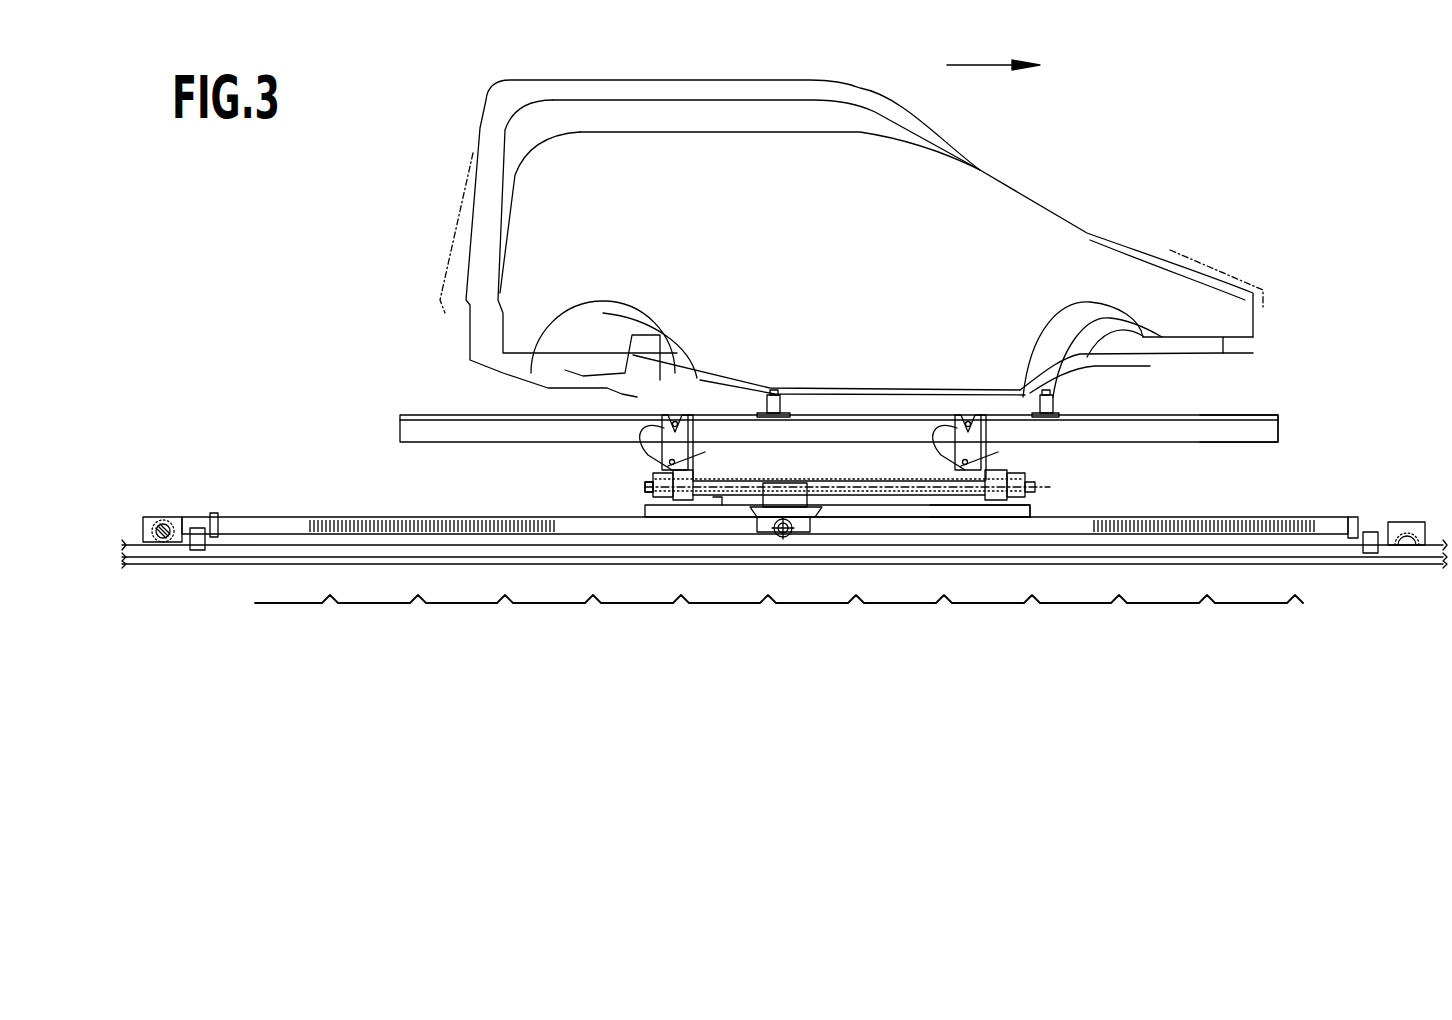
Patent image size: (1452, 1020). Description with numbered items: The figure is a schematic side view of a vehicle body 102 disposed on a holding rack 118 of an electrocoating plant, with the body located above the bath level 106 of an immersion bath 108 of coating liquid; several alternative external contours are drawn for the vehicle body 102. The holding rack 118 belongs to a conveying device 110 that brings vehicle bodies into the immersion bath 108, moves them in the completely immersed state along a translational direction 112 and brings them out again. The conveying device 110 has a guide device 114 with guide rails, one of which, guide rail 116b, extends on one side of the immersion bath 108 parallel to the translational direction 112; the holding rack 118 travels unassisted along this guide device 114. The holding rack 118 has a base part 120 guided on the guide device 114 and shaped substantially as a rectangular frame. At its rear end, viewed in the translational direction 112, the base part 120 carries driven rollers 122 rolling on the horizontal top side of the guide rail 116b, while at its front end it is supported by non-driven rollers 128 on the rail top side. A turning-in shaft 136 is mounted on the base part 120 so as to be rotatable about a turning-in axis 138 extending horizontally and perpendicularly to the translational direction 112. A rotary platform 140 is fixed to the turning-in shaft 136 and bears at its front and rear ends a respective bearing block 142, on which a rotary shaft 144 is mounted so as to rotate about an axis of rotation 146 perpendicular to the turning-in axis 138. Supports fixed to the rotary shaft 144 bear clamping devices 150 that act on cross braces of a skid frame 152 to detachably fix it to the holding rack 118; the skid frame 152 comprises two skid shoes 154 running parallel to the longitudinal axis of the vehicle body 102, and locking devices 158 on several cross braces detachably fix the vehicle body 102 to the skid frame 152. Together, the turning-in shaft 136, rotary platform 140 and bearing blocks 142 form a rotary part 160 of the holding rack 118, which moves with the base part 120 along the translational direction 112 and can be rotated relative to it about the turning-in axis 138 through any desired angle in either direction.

The vehicle body 102 is at (980, 177).
The bath level 106 is at (1163, 582).
The immersion bath 108 is at (889, 688).
The conveying device 110 is at (132, 512).
The translational direction 112 is at (980, 64).
The guide device 114 is at (290, 575).
The guide rail 116b is at (228, 547).
The holding rack 118 is at (318, 510).
The base part 120 is at (244, 510).
The driven roller 122 is at (163, 542).
The non-driven roller 128 is at (1407, 545).
The turning-in shaft 136 is at (780, 537).
The turning-in axis 138 is at (810, 560).
The rotary platform 140 is at (947, 510).
The bearing block 142 is at (655, 497).
The rotary shaft 144 is at (718, 508).
The axis of rotation 146 is at (633, 478).
The clamping device 150 is at (650, 425).
The skid frame 152 is at (1260, 423).
The skid shoe 154 is at (440, 423).
The locking device 158 is at (743, 397).
The rotary part 160 is at (1055, 501).